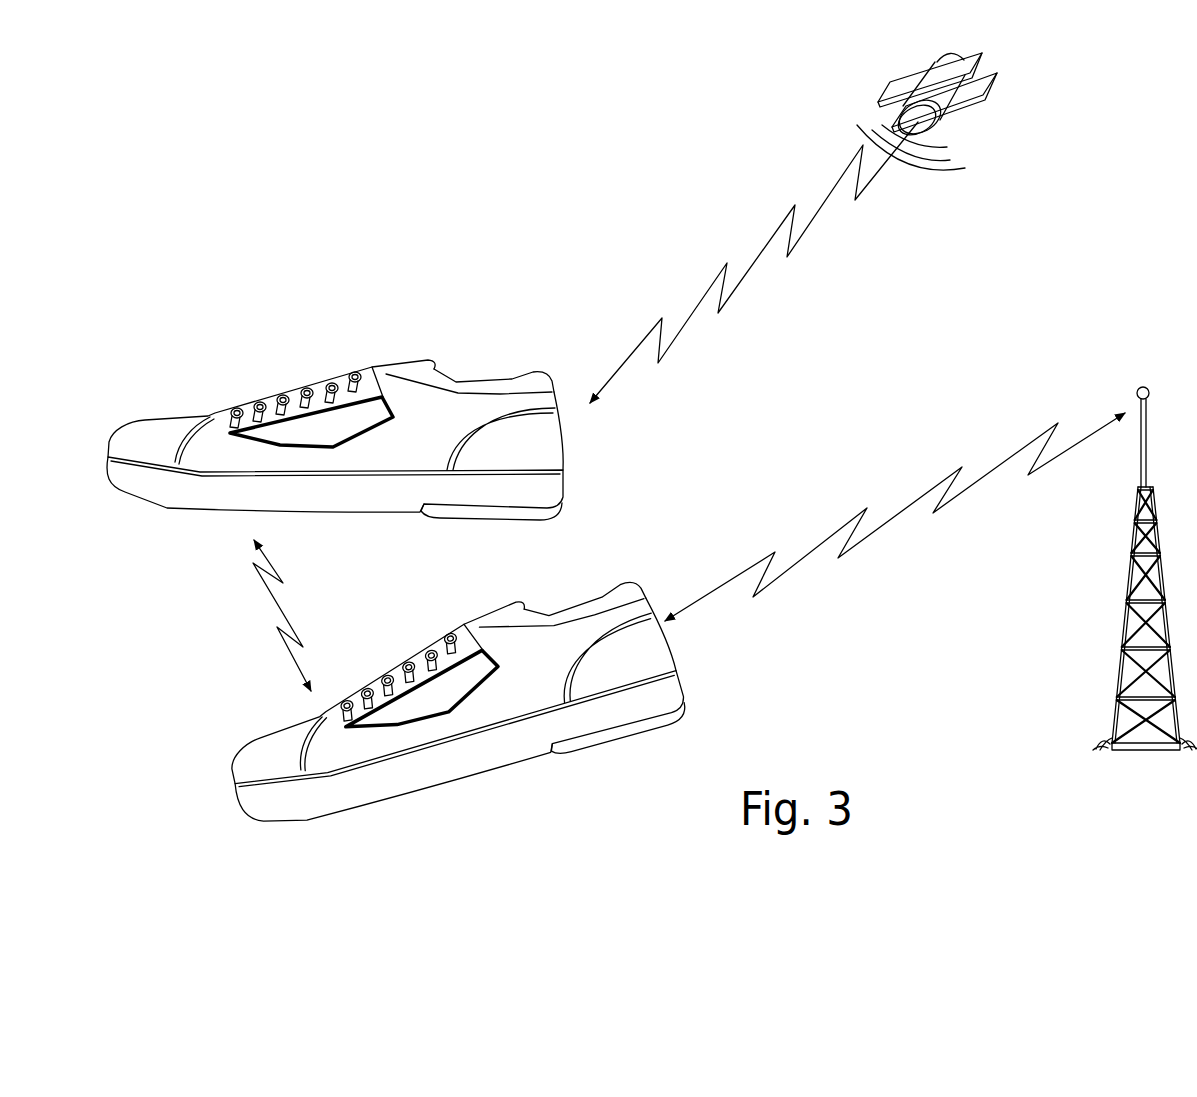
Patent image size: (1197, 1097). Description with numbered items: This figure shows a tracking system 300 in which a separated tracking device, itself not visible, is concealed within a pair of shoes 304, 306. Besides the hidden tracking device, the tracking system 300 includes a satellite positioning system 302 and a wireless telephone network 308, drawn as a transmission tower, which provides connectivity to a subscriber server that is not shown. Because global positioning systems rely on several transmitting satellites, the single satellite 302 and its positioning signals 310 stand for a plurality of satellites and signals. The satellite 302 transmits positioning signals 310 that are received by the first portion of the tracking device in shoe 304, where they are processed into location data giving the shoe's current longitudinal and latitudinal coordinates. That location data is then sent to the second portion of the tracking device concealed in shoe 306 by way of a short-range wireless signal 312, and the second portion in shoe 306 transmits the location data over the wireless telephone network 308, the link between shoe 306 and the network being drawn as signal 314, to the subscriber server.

The tracking system 300 is at (310, 121).
The satellite positioning system 302 is at (824, 119).
The shoe 304 is at (240, 370).
The shoe 306 is at (229, 734).
The wireless telephone network 308 is at (1042, 609).
The positioning signals 310 is at (803, 228).
The short-range wireless signal 312 is at (282, 600).
The tower signal 314 is at (1012, 457).